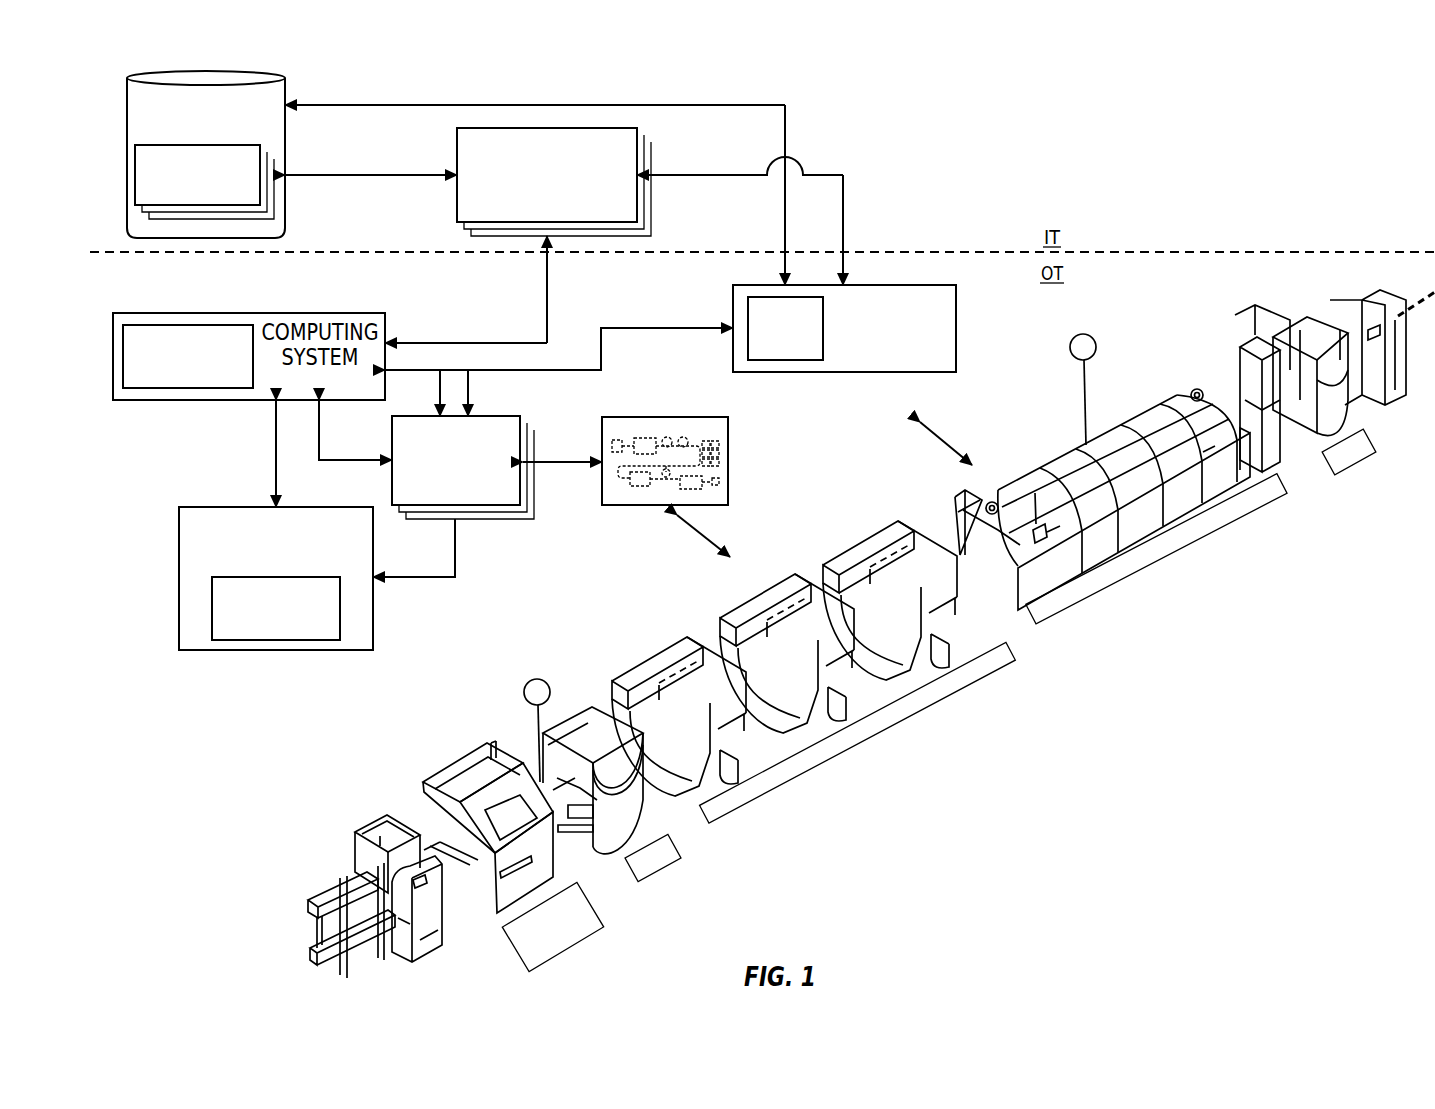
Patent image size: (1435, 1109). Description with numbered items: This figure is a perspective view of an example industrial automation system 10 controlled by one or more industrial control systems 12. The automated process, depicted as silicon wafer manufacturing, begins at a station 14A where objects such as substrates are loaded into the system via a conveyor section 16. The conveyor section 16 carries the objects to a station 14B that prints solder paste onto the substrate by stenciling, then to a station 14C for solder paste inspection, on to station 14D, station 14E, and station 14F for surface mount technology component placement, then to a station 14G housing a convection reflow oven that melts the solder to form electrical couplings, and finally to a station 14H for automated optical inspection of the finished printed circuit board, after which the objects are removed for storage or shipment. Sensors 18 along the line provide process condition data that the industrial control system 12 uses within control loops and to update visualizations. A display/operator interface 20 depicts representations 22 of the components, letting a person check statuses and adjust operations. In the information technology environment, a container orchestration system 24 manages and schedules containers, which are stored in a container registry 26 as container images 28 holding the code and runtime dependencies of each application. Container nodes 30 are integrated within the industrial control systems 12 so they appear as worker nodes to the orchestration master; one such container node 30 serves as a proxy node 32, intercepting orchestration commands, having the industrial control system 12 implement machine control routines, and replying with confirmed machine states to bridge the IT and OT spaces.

The industrial automation system 10 is at (1376, 118).
The industrial control system 12 is at (179, 580).
The station 14A is at (372, 830).
The station 14B is at (458, 775).
The station 14C is at (568, 710).
The station 14D is at (650, 655).
The station 14E is at (760, 592).
The station 14F is at (863, 542).
The station 14G is at (1070, 457).
The station 14H is at (1290, 325).
The conveyor section 16 is at (437, 850).
The sensor 18 is at (531, 680).
The display/operator interface 20 is at (681, 445).
The representations 22 is at (652, 425).
The container orchestration system 24 is at (457, 152).
The container registry 26 is at (287, 152).
The container image 28 is at (207, 207).
The container node 30 is at (190, 388).
The proxy node 32 is at (785, 360).